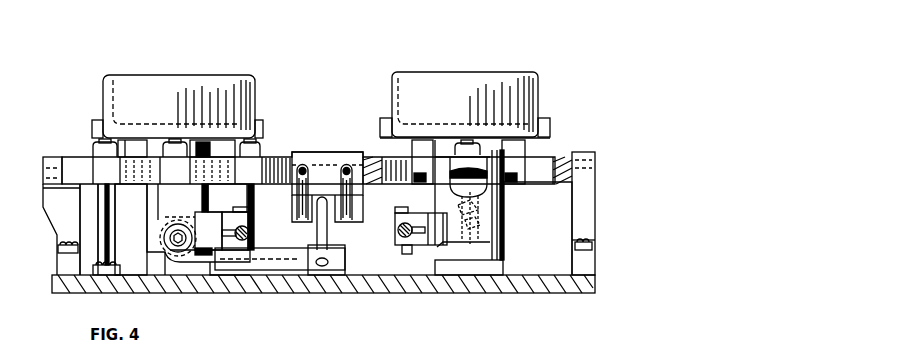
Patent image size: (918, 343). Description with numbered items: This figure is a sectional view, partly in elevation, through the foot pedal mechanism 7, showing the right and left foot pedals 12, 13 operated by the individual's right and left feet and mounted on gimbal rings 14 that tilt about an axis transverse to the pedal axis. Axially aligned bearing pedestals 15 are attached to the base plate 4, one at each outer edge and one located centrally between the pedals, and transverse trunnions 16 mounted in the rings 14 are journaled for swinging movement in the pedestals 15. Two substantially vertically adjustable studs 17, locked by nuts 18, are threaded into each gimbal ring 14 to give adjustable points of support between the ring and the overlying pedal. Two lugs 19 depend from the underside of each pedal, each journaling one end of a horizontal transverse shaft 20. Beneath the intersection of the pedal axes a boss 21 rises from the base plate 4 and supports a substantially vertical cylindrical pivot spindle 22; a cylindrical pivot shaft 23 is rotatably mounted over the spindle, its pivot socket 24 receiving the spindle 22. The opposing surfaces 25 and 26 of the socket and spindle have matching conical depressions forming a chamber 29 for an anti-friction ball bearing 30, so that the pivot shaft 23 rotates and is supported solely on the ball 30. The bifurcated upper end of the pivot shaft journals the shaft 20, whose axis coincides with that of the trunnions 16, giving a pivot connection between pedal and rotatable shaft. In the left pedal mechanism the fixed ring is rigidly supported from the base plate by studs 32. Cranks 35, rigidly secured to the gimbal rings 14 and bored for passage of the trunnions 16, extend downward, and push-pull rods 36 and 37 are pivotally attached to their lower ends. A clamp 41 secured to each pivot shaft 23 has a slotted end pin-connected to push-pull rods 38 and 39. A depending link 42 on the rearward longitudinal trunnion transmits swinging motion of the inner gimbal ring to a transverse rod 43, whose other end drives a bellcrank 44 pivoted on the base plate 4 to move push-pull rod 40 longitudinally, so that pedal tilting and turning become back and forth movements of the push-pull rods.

The base plate 4 is at (555, 274).
The foot pedal mechanism 7 is at (318, 48).
The foot pedal 12 is at (507, 74).
The foot pedal 13 is at (212, 74).
The gimbal ring 14 is at (93, 186).
The bearing pedestal 15 is at (62, 264).
The transverse trunnion 16 is at (287, 160).
The adjustable stud 17 is at (98, 147).
The nut 18 is at (93, 151).
The lug 19 is at (225, 153).
The horizontal transverse shaft 20 is at (450, 180).
The boss 21 is at (473, 262).
The pivot spindle 22 is at (504, 242).
The pivot shaft 23 is at (158, 245).
The pivot socket 24 is at (505, 251).
The surface 25 is at (505, 208).
The surface 26 is at (428, 214).
The chamber 29 is at (503, 197).
The ball bearing 30 is at (503, 220).
The stud 32 is at (109, 262).
The crank 35 is at (292, 191).
The push-pull rod 36 is at (347, 167).
The push-pull rod 37 is at (301, 167).
The push-pull rod 38 is at (403, 240).
The push-pull rod 39 is at (254, 218).
The push-pull rod 40 is at (343, 262).
The clamp 41 is at (212, 230).
The link 42 is at (163, 193).
The transverse rod 43 is at (192, 257).
The bellcrank 44 is at (290, 262).